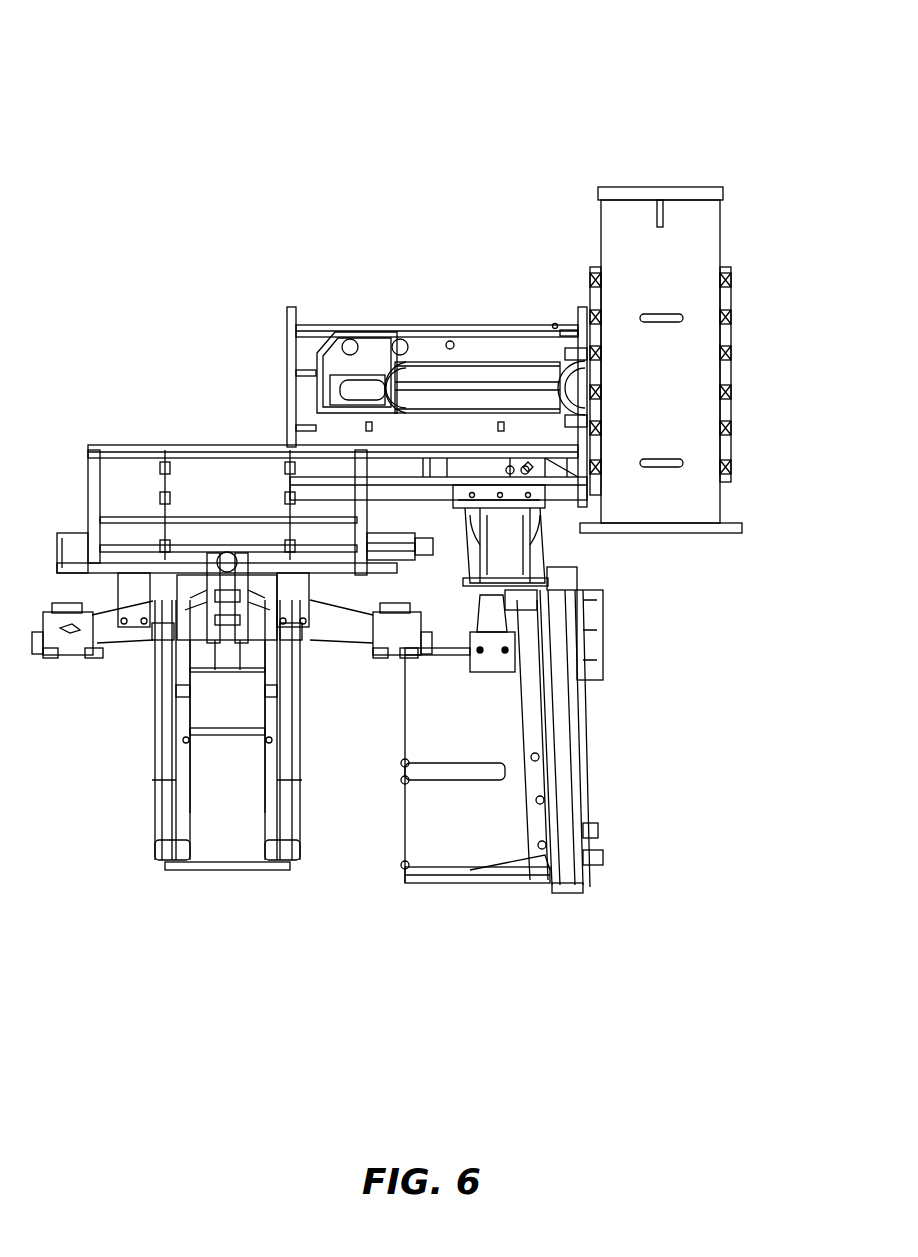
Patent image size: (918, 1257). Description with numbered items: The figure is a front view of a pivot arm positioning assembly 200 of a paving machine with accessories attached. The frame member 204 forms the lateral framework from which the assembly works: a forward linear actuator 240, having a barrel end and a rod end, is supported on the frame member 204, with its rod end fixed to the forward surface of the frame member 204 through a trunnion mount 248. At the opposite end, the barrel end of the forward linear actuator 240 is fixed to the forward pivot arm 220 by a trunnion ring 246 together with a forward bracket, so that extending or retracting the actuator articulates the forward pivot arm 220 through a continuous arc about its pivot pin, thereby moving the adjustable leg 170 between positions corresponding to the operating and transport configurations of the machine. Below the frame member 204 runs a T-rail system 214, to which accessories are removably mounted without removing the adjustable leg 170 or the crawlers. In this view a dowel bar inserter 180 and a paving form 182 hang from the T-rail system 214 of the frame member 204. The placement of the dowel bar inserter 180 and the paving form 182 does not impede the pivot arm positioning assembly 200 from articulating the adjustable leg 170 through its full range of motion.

The pivot arm positioning assembly 200 is at (260, 105).
The adjustable leg 170 is at (618, 258).
The forward pivot arm 220 is at (728, 297).
The frame member 204 is at (441, 325).
The forward linear actuator 240 is at (443, 373).
The trunnion mount 248 is at (370, 372).
The trunnion ring 246 is at (563, 375).
The T-rail system 214 is at (567, 505).
The dowel bar inserter 180 is at (207, 873).
The paving form 182 is at (460, 883).